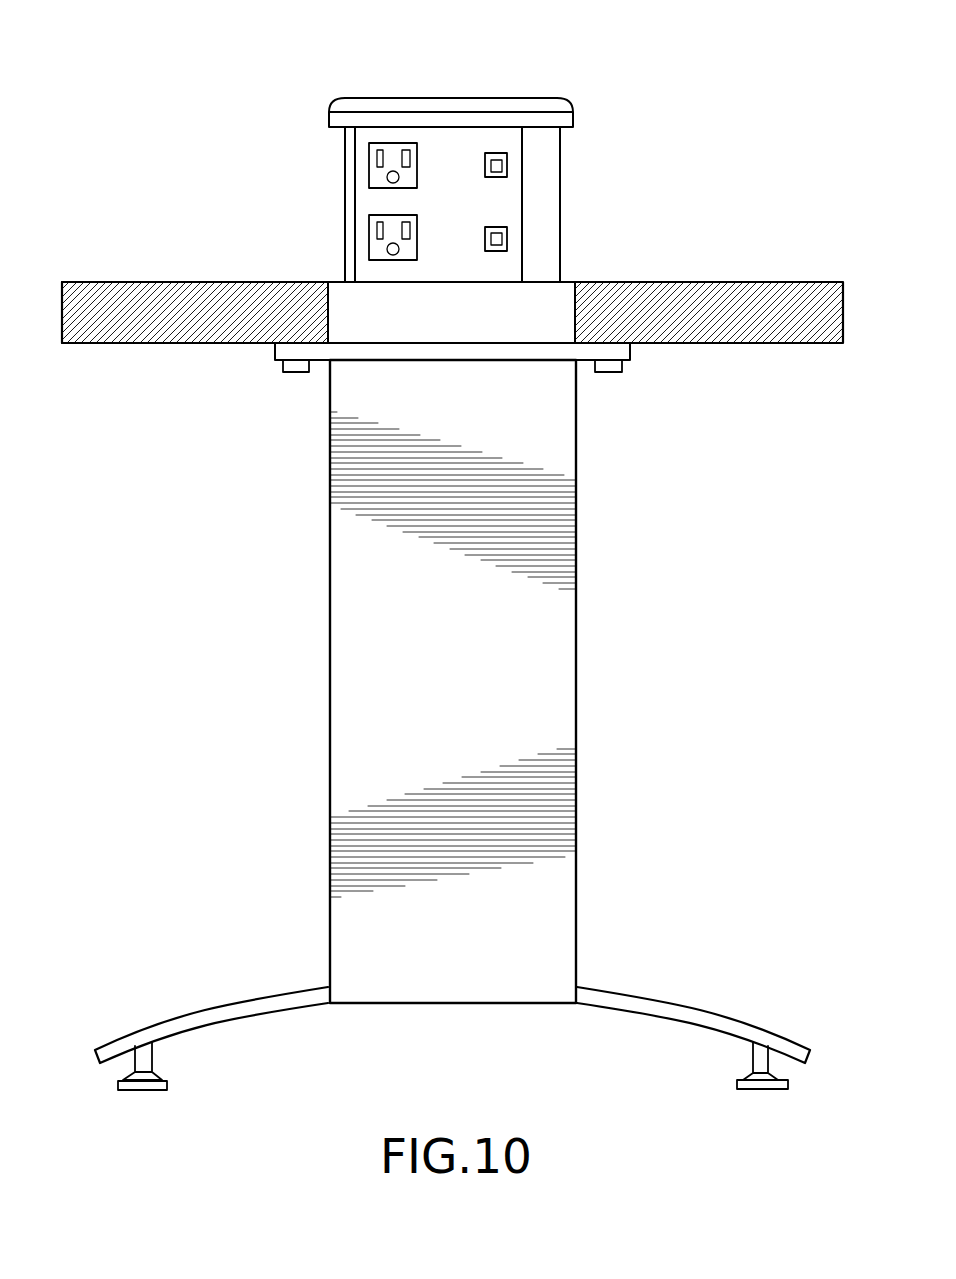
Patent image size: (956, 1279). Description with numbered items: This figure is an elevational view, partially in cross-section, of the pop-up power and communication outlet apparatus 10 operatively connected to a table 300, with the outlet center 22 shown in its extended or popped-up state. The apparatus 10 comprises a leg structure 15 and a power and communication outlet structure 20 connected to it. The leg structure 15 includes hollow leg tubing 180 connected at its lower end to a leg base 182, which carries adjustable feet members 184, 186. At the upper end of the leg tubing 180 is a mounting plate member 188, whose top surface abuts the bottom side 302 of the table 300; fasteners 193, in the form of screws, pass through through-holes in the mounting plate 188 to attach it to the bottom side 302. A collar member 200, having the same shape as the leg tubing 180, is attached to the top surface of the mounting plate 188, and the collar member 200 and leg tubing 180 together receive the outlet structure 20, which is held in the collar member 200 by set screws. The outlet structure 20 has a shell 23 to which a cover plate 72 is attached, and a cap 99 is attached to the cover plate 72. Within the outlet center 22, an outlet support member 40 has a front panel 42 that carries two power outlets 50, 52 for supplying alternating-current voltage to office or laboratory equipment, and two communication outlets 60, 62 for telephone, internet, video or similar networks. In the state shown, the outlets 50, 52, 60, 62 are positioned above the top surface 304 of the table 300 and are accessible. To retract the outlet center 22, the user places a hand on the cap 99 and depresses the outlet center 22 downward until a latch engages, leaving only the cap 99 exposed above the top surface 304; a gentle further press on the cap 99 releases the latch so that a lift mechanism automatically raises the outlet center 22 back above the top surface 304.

The power and communication outlet apparatus 10 is at (128, 499).
The leg structure 15 is at (335, 485).
The power and communication outlet structure 20 is at (345, 192).
The outlet center 22 is at (560, 168).
The shell 23 is at (560, 150).
The outlet support member 40 is at (510, 198).
The front panel 42 is at (507, 260).
The outlet 50 is at (369, 156).
The outlet 52 is at (369, 234).
The communication outlet 60 is at (487, 152).
The communication outlet 62 is at (487, 227).
The cover plate 72 is at (328, 115).
The cap 99 is at (441, 141).
The hollow leg tubing 180 is at (328, 617).
The leg base 182 is at (621, 993).
The adjustable feet member 184 is at (167, 1083).
The adjustable feet member 186 is at (737, 1082).
The mounting plate member 188 is at (585, 362).
The fasteners 193 is at (283, 377).
The collar member 200 is at (363, 323).
The table 300 is at (780, 282).
The bottom side 302 is at (128, 343).
The top surface 304 is at (127, 282).